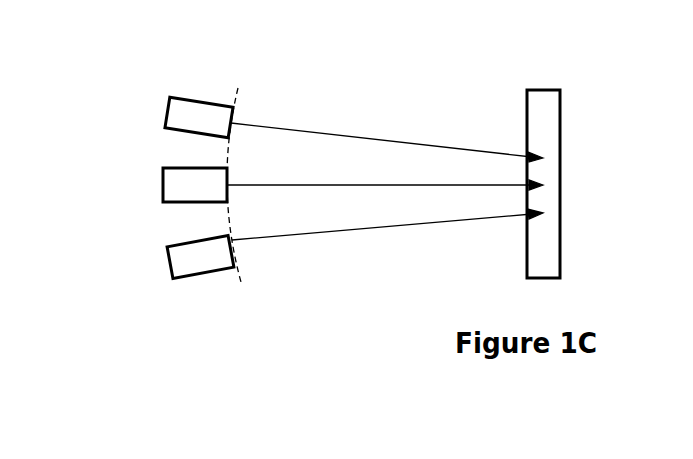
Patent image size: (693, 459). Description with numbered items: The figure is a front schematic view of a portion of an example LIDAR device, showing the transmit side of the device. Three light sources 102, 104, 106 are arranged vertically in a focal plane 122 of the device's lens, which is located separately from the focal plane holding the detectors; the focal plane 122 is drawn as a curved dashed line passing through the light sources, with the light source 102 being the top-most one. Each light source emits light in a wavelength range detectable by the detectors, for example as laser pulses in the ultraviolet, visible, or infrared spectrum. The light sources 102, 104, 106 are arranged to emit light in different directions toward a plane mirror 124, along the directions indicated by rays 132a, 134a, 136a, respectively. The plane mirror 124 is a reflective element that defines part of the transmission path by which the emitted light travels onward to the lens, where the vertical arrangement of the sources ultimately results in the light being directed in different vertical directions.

The light source 102 is at (163, 110).
The light source 104 is at (163, 183).
The light source 106 is at (167, 262).
The focal plane 122 is at (237, 97).
The plane mirror 124 is at (543, 90).
The ray 132a is at (338, 133).
The ray 134a is at (307, 183).
The ray 136a is at (307, 237).